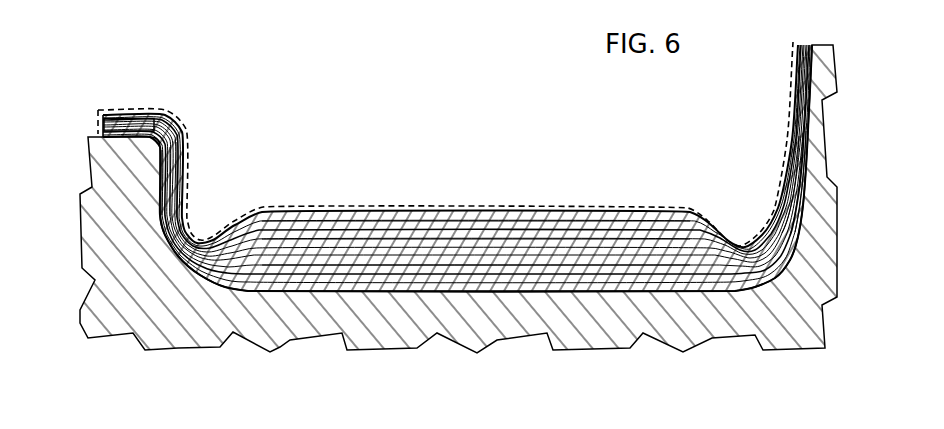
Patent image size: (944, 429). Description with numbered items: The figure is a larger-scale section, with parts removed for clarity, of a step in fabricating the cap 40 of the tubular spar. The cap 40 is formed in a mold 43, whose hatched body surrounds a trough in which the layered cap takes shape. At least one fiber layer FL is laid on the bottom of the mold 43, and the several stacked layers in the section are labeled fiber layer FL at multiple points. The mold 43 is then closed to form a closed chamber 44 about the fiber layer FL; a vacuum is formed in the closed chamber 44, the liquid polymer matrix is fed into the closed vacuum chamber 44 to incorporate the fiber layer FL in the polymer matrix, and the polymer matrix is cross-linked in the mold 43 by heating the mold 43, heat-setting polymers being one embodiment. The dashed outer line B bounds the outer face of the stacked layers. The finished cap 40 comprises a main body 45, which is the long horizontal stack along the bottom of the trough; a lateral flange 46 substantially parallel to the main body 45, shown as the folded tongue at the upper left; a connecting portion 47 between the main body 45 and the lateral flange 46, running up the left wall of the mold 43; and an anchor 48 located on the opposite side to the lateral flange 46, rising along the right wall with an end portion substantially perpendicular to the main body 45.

The cap 40 is at (455, 208).
The mold 43 is at (488, 302).
The closed chamber 44 is at (487, 208).
The main body 45 is at (583, 237).
The lateral flange 46 is at (135, 113).
The connecting portion 47 is at (170, 187).
The anchor 48 is at (775, 215).
The outer boundary B is at (425, 208).
The fiber layer FL is at (291, 222).